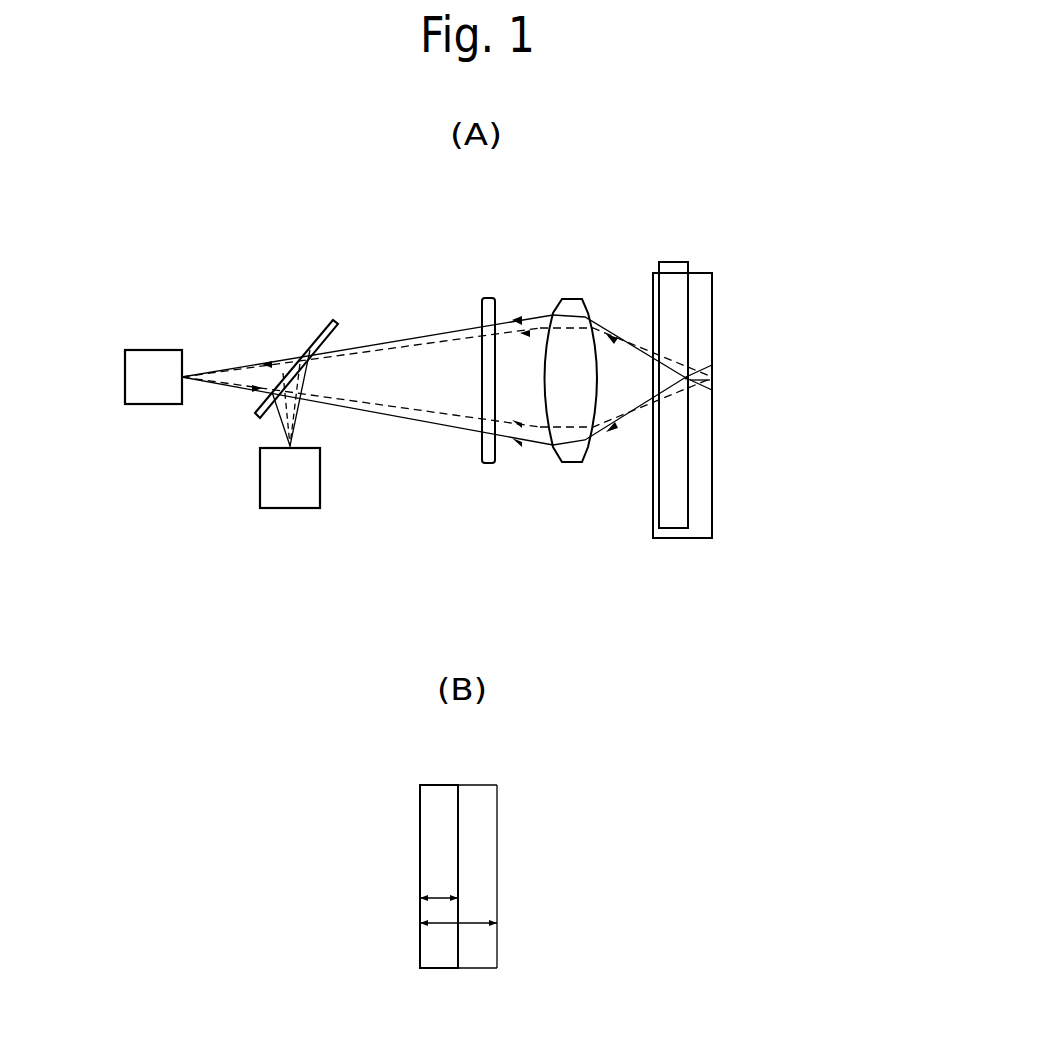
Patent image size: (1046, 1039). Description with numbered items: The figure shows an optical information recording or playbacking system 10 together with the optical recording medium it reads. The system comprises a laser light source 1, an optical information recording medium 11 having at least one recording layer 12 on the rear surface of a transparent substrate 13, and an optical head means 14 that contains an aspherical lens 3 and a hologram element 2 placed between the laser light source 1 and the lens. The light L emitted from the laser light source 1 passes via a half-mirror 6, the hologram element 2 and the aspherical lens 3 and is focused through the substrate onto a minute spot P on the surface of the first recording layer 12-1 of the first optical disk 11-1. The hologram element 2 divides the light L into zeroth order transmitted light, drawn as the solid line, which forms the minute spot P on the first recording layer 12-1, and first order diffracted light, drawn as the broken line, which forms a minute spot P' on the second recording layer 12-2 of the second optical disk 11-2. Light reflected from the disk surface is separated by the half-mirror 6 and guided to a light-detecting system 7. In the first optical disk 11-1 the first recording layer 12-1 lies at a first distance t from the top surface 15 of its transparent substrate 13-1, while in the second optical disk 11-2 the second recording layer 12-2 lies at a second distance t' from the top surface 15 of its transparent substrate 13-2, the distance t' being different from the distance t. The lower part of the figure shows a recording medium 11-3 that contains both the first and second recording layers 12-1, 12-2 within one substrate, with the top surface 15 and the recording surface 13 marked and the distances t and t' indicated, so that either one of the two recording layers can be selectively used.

The laser light source 1 is at (138, 397).
The hologram element 2 is at (488, 298).
The aspherical lens 3 is at (570, 462).
The half-mirror 6 is at (312, 335).
The light-detecting system 7 is at (277, 503).
The optical information recording or playbacking system 10 is at (338, 226).
The optical information recording medium 11 is at (712, 305).
The first optical disk 11-1 is at (672, 261).
The second optical disk 11-2 is at (700, 273).
The recording medium 11-3 is at (445, 785).
The recording layer 12 is at (712, 453).
The first recording layer 12-1 is at (688, 337).
The second recording layer 12-2 is at (712, 355).
The transparent substrate 13 is at (700, 532).
The transparent substrate 13-1 is at (672, 505).
The transparent substrate 13-2 is at (697, 503).
The optical head means 14 is at (662, 586).
The top surface 15 is at (662, 263).
The light L is at (223, 368).
The minute spot P is at (716, 374).
The minute spot P' is at (739, 399).
The first distance t is at (439, 885).
The second distance t' is at (458, 911).